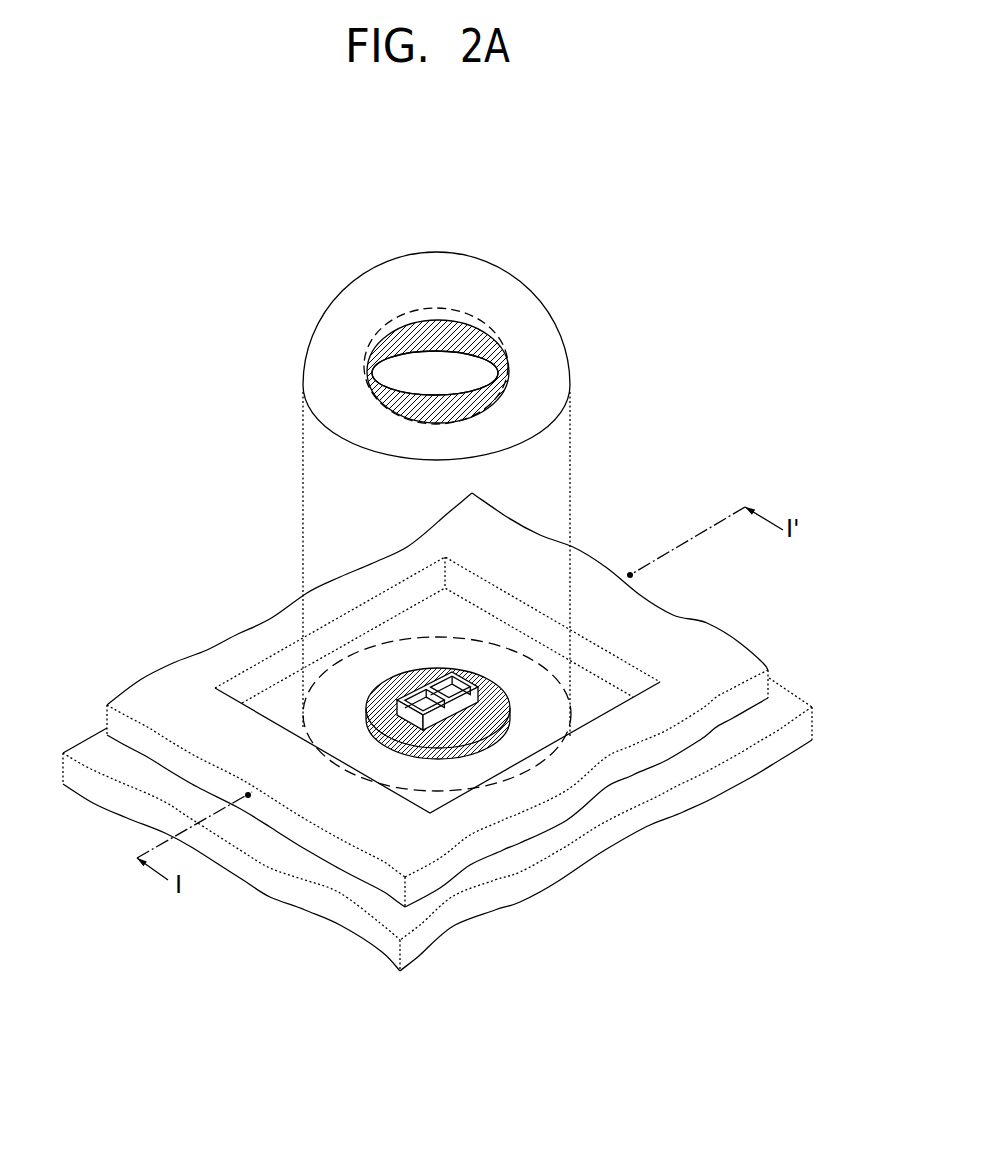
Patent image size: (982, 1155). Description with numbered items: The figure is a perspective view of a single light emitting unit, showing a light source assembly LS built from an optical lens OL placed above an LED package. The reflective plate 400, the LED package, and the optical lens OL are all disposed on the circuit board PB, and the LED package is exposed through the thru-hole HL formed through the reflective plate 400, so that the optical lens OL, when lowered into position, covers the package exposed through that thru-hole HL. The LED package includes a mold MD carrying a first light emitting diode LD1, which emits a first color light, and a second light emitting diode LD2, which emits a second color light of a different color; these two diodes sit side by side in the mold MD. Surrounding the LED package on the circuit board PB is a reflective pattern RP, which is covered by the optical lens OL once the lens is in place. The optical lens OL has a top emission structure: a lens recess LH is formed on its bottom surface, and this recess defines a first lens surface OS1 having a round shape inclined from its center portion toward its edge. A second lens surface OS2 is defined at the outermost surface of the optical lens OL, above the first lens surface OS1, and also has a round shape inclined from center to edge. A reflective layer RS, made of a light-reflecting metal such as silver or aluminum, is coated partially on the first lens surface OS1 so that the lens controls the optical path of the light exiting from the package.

The reflective plate 400 is at (173, 684).
The thru-hole HL is at (252, 667).
The circuit board PB is at (482, 630).
The reflective pattern RP is at (305, 662).
The mold MD is at (377, 703).
The first light emitting diode LD1 is at (422, 690).
The second light emitting diode LD2 is at (453, 672).
The light source unit LS is at (478, 334).
The optical lens OL is at (456, 334).
The first lens surface OS1 is at (510, 380).
The second lens surface OS2 is at (567, 338).
The reflective layer RS is at (445, 333).
The lens recess LH is at (398, 368).